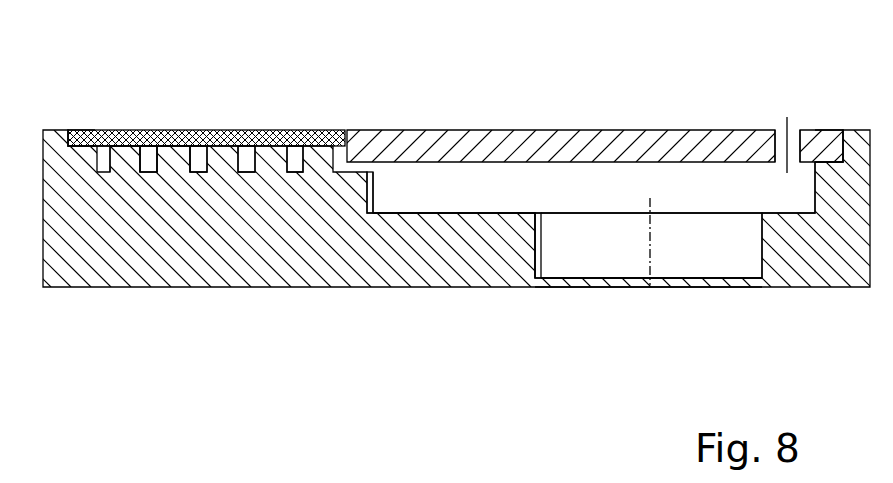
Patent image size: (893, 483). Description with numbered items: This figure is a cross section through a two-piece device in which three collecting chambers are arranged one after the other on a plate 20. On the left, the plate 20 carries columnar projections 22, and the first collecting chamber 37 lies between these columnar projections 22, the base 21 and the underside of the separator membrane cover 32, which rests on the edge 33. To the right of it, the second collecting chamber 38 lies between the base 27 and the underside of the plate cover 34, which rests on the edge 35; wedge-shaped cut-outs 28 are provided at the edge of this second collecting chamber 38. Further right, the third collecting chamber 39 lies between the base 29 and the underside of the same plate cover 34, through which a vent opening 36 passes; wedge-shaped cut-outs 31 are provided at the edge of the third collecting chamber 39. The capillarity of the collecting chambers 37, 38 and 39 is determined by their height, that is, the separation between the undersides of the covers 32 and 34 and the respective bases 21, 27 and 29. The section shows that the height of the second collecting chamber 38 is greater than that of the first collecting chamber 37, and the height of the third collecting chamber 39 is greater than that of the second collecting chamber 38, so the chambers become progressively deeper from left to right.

The plate 20 is at (65, 253).
The base of first collecting chamber 21 is at (197, 173).
The columnar projections 22 is at (173, 158).
The base of second collecting chamber 27 is at (432, 210).
The wedge-shaped cut-outs 28 is at (370, 193).
The base of third collecting chamber 29 is at (730, 276).
The wedge-shaped cut-outs 31 is at (538, 257).
The separator membrane cover 32 is at (325, 140).
The edge 33 is at (82, 145).
The plate cover 34 is at (562, 137).
The edge 35 is at (828, 163).
The vent opening 36 is at (785, 142).
The first collecting chamber 37 is at (295, 160).
The second collecting chamber 38 is at (466, 188).
The third collecting chamber 39 is at (617, 235).